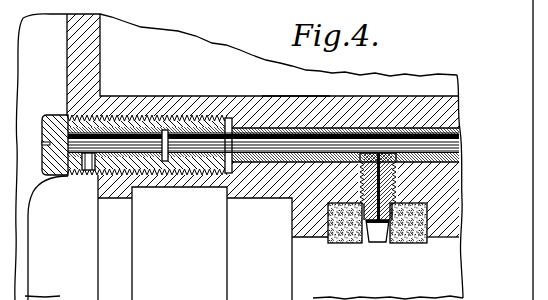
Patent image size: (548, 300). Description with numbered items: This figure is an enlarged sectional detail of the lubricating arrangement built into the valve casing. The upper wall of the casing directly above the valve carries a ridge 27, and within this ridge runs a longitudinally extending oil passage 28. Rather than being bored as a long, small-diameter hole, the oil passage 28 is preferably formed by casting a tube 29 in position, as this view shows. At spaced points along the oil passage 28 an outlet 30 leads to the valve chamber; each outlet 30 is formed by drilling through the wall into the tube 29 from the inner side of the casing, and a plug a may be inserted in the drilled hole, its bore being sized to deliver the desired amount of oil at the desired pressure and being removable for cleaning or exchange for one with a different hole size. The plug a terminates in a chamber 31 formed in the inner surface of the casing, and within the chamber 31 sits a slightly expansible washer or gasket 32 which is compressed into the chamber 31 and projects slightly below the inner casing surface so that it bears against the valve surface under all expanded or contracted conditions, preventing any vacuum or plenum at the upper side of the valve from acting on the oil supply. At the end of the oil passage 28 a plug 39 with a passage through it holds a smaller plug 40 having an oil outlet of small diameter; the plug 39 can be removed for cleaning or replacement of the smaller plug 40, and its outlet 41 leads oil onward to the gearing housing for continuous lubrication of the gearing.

The ridge 27 is at (247, 97).
The oil passage 28 is at (328, 128).
The tube 29 is at (290, 97).
The outlet 30 is at (380, 223).
The chamber 31 is at (423, 223).
The washer or gasket 32 is at (407, 243).
The plug 39 is at (123, 122).
The smaller plug 40 is at (200, 176).
The outlet 41 is at (85, 172).
The plug a is at (383, 255).